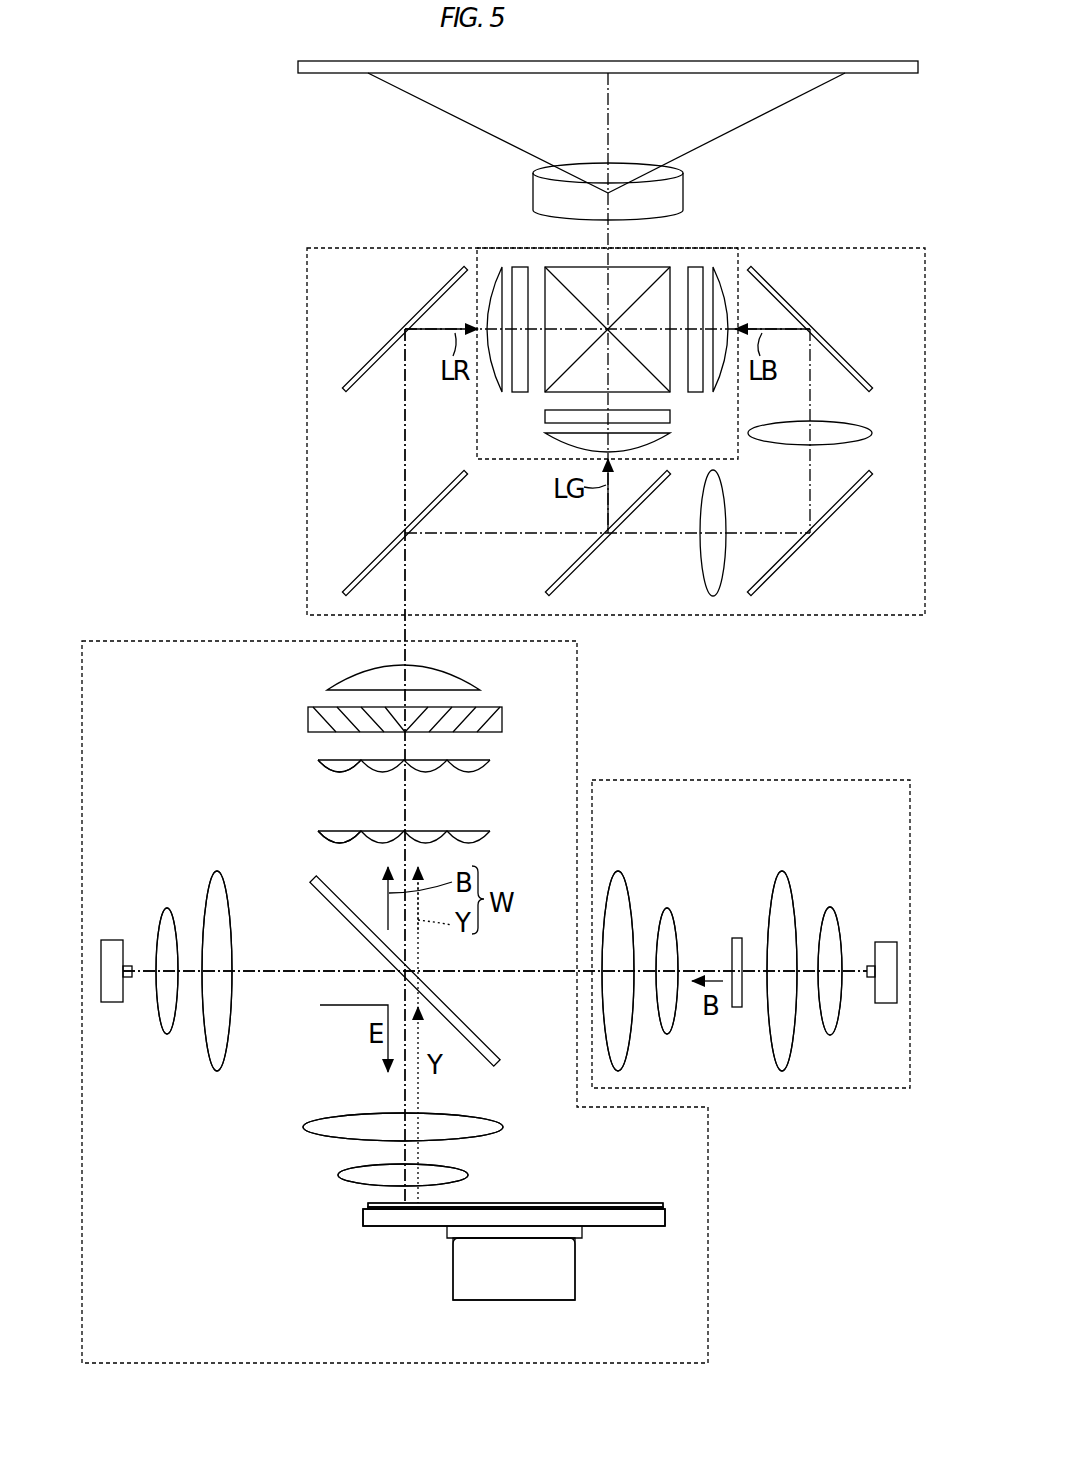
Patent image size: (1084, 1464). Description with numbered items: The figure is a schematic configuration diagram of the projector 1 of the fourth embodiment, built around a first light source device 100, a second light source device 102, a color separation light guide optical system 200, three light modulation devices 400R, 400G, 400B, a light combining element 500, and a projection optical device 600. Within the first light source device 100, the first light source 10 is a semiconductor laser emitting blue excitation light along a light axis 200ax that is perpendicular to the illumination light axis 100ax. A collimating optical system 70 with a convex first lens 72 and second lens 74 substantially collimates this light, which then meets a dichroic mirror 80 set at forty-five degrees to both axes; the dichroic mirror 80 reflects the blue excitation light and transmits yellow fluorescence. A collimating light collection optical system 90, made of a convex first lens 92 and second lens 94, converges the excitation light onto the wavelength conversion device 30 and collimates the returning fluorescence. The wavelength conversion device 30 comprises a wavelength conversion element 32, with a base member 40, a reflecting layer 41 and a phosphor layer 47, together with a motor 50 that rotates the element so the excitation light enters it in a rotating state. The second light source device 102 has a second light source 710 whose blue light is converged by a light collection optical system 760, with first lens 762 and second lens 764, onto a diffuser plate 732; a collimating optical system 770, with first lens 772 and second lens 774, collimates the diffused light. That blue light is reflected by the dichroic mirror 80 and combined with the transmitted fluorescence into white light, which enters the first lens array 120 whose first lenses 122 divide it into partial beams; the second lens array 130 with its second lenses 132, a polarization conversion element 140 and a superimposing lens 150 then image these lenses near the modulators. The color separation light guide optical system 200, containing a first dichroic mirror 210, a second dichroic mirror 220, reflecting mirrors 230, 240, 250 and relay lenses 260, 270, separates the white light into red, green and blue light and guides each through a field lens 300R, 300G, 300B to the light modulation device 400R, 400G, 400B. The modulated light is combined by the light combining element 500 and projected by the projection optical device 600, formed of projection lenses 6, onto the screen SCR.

The projector 1 is at (258, 163).
The projection lens 6 is at (590, 170).
The screen SCR is at (883, 74).
The projection optical device 600 is at (533, 192).
The light combining element 500 is at (660, 268).
The light modulation device 400R is at (518, 267).
The field lens 300R is at (492, 268).
The light modulation device 400B is at (696, 267).
The field lens 300B is at (718, 268).
The light modulation device 400G is at (546, 418).
The field lens 300G is at (547, 440).
The color separation light guide optical system 200 is at (863, 616).
The reflecting mirror 230 is at (343, 374).
The reflecting mirror 250 is at (873, 375).
The relay lens 270 is at (845, 422).
The first dichroic mirror 210 is at (370, 562).
The second dichroic mirror 220 is at (590, 562).
The relay lens 260 is at (698, 555).
The reflecting mirror 240 is at (835, 520).
The illumination light axis 100ax is at (405, 630).
The light axis 200ax is at (285, 975).
The first light source device 100 is at (708, 1280).
The second light source device 102 is at (863, 1089).
The superimposing lens 150 is at (468, 672).
The polarization conversion element 140 is at (484, 707).
The second lens array 130 is at (488, 765).
The second lens 132 is at (322, 768).
The first lens array 120 is at (488, 833).
The first lens 122 is at (322, 839).
The first light source 10 is at (133, 935).
The collimating optical system 70 is at (230, 806).
The first lens 72 is at (165, 906).
The second lens 74 is at (220, 872).
The dichroic mirror 80 is at (485, 1037).
The collimating light collection optical system 90 is at (245, 1142).
The second lens 94 is at (310, 1138).
The first lens 92 is at (350, 1185).
The wavelength conversion device 30 is at (428, 1255).
The wavelength conversion element 32 is at (590, 1200).
The phosphor layer 47 is at (665, 1204).
The reflecting layer 41 is at (668, 1207).
The base member 40 is at (668, 1222).
The motor 50 is at (563, 1277).
The second light source 710 is at (860, 942).
The light collection optical system 760 is at (873, 832).
The second lens 764 is at (792, 881).
The first lens 762 is at (843, 906).
The diffuser plate 732 is at (737, 937).
The collimating optical system 770 is at (710, 832).
The second lens 774 is at (627, 882).
The first lens 772 is at (680, 906).